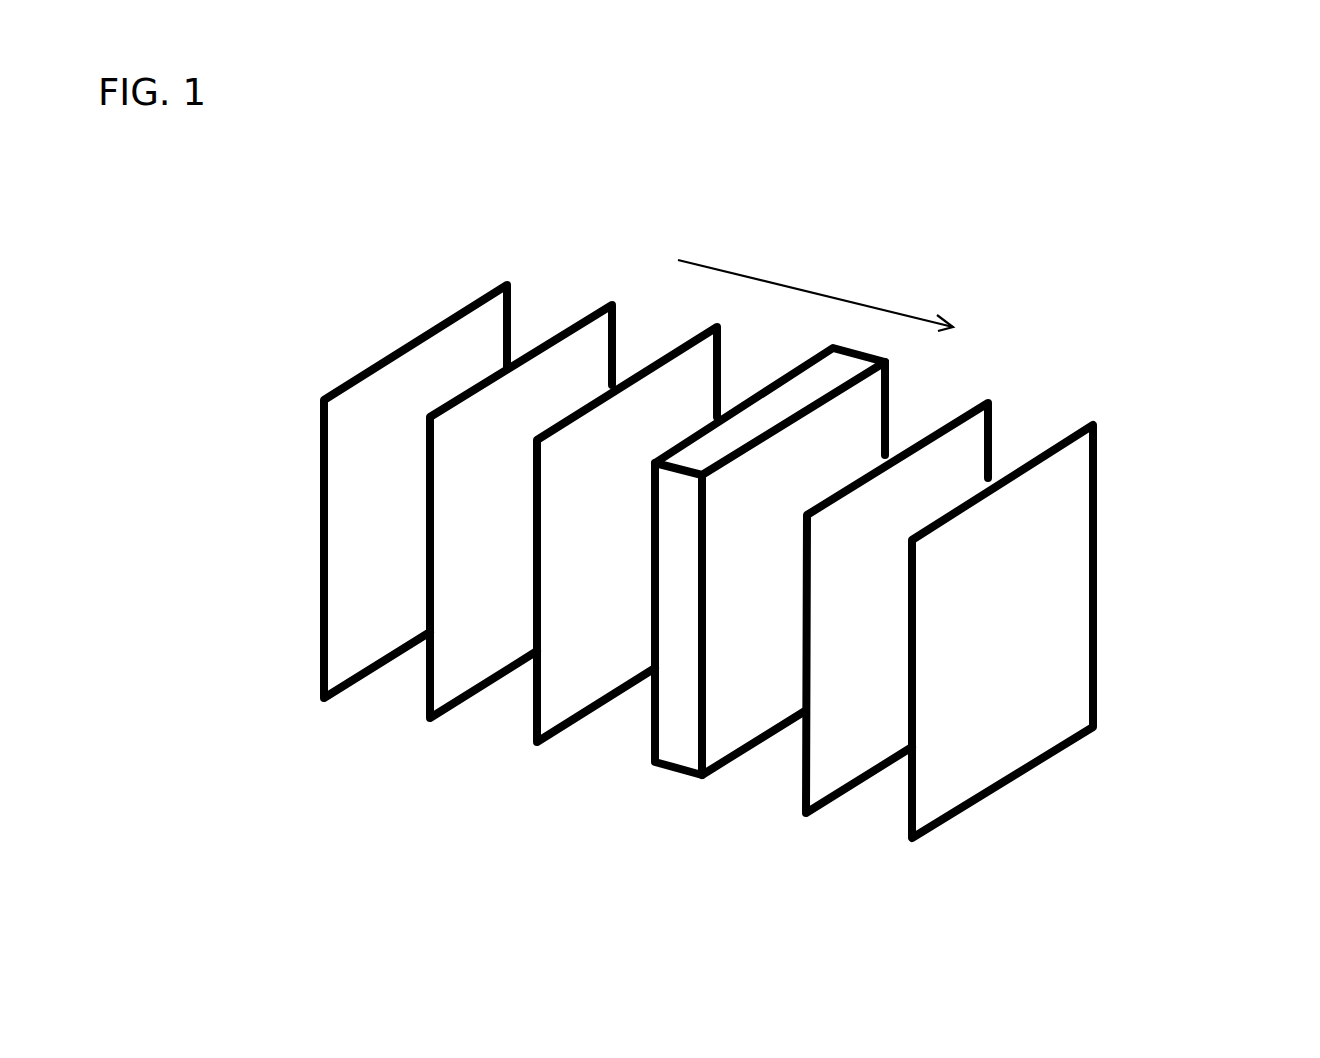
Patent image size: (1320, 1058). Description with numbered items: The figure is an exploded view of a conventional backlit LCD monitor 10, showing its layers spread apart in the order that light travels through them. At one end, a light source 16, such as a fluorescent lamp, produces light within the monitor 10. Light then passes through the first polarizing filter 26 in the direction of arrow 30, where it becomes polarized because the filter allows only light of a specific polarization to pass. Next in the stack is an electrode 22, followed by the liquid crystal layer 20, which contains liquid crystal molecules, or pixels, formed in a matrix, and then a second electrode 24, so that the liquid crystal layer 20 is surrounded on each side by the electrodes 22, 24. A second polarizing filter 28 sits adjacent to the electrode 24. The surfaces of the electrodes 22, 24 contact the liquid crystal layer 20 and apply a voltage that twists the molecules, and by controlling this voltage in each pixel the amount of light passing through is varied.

The LCD monitor 10 is at (1127, 264).
The light source 16 is at (365, 412).
The first polarizing filter 26 is at (574, 352).
The electrode 22 is at (555, 683).
The liquid crystal layer 20 is at (678, 717).
The electrode 24 is at (958, 460).
The polarizing filter 28 is at (1063, 492).
The arrow 30 is at (815, 286).